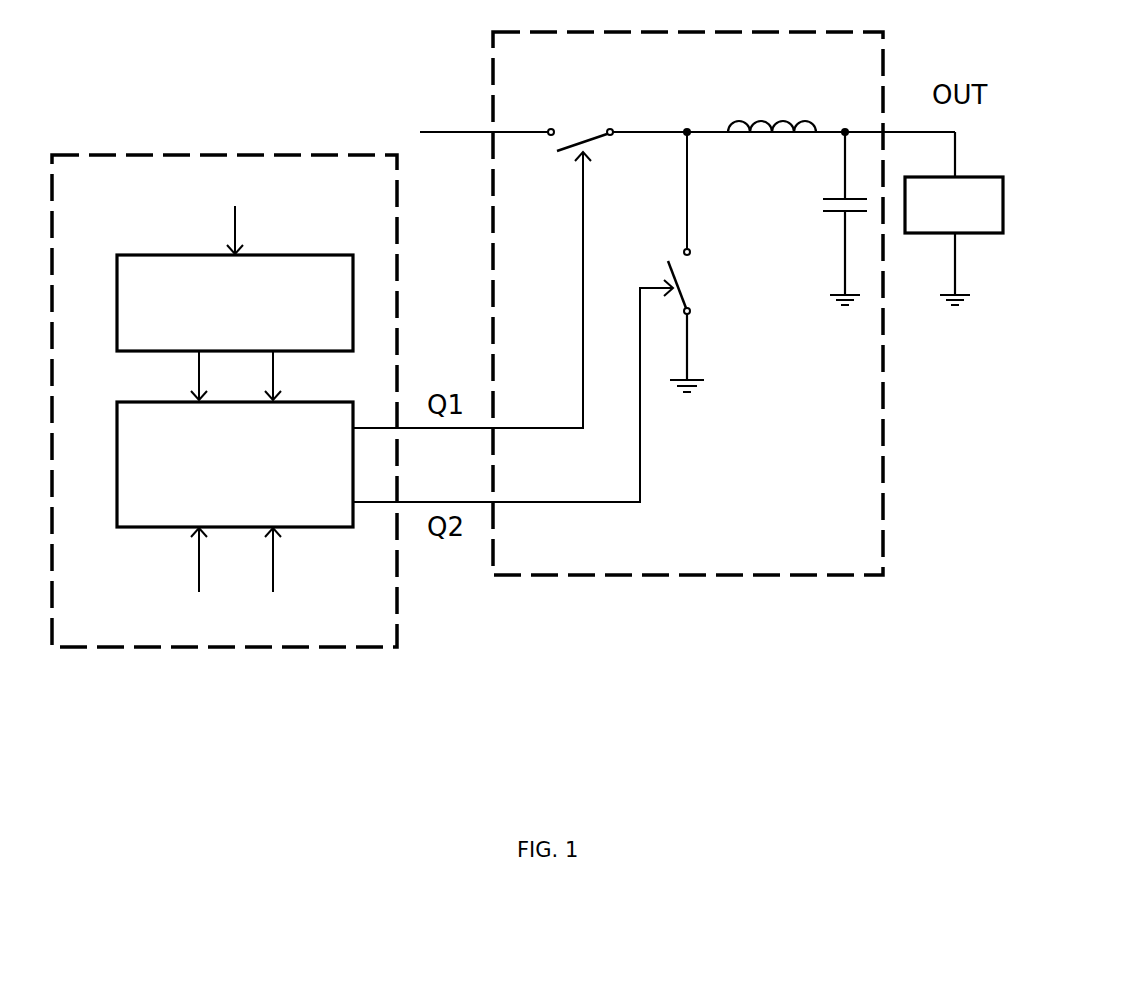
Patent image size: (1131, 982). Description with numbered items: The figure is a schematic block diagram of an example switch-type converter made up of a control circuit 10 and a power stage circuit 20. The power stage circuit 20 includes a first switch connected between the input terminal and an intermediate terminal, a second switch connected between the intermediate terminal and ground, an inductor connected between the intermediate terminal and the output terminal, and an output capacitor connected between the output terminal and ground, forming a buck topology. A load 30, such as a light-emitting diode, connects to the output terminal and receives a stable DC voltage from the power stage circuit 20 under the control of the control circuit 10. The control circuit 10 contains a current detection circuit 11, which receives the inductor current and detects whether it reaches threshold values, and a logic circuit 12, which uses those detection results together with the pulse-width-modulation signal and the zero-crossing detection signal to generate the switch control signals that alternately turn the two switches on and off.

The control circuit 10 is at (397, 640).
The current detection circuit 11 is at (235, 303).
The logic circuit 12 is at (235, 464).
The power stage circuit 20 is at (883, 463).
The load 30 is at (1003, 206).